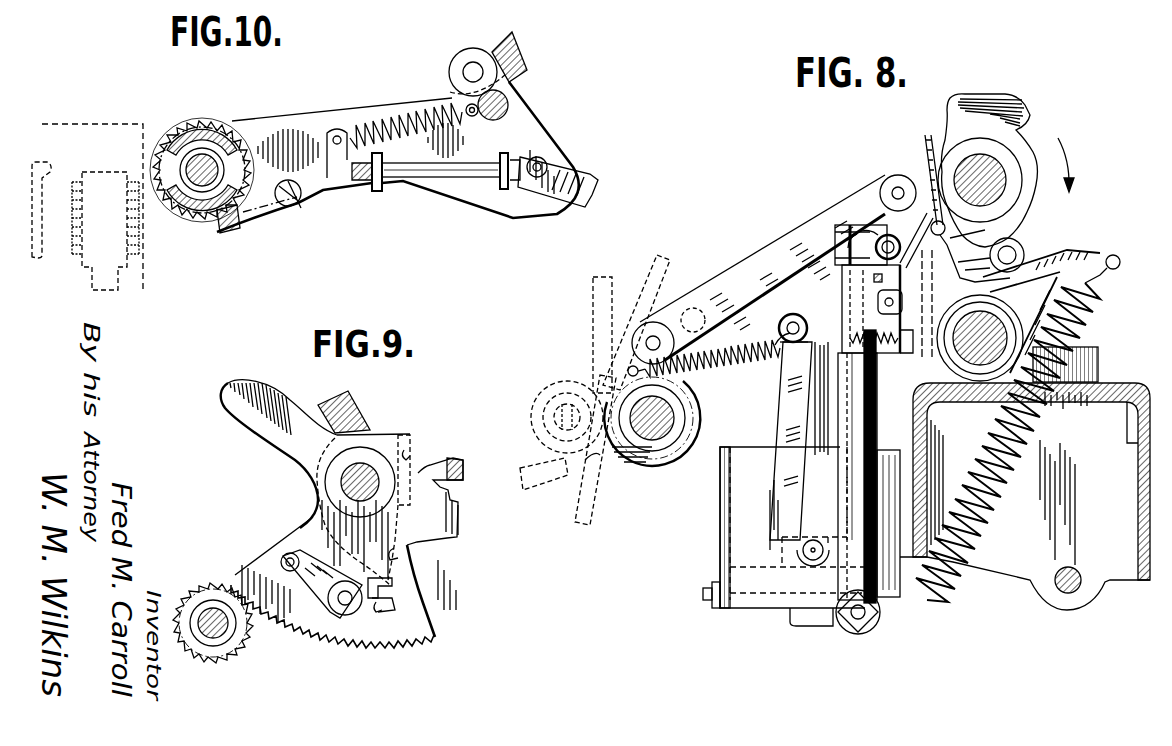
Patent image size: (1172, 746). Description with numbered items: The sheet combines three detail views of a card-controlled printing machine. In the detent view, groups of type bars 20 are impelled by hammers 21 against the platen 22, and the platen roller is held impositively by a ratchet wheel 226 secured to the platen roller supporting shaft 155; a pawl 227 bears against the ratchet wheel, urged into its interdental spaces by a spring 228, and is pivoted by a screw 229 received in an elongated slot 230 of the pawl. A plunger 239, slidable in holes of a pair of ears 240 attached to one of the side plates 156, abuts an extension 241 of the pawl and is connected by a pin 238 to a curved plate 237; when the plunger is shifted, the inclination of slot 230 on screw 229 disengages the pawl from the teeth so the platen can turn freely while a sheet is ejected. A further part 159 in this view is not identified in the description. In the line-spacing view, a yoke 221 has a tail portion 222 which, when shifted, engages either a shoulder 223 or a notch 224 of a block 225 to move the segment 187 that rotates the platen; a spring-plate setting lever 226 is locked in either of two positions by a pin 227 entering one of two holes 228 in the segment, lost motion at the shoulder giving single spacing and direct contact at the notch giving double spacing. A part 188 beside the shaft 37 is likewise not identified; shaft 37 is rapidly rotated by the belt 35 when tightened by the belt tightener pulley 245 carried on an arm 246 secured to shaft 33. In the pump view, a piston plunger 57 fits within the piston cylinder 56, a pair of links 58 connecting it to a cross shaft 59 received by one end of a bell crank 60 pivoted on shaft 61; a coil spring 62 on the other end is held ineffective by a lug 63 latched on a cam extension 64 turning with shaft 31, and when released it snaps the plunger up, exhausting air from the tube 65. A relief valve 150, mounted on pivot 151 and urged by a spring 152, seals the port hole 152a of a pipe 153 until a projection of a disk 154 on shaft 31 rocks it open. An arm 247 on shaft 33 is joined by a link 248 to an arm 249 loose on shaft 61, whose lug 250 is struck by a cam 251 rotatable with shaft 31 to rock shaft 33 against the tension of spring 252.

In FIG. 10, the hammers 21 is at (50, 170).
In FIG. 10, the type bars 20 is at (118, 172).
In FIG. 10, the platen 22 is at (182, 128).
In FIG. 10, the platen roller supporting shaft 155 is at (212, 160).
In FIG. 10, the side plates 156 is at (318, 135).
In FIG. 10, the spring / holes 228 is at (395, 125).
In FIG. 9, the spring / holes 228 is at (281, 602).
In FIG. 10, the arm extension 159 is at (520, 58).
In FIG. 10, the ears 240 is at (507, 160).
In FIG. 10, the pin 238 is at (548, 163).
In FIG. 10, the curved plate 237 is at (590, 180).
In FIG. 10, the ratchet wheel / setting lever 226 is at (215, 195).
In FIG. 9, the ratchet wheel / setting lever 226 is at (303, 570).
In FIG. 10, the pawl / pin 227 is at (238, 222).
In FIG. 9, the pawl / pin 227 is at (289, 553).
In FIG. 10, the screw 229 is at (305, 192).
In FIG. 10, the elongated slot 230 is at (385, 187).
In FIG. 10, the extension 241 is at (388, 186).
In FIG. 10, the plunger 239 is at (478, 178).
In FIG. 9, the yoke 221 is at (410, 455).
In FIG. 9, the tail portion 222 is at (398, 560).
In FIG. 9, the shoulder 223 is at (374, 590).
In FIG. 9, the notch 224 is at (392, 598).
In FIG. 9, the block 225 is at (380, 606).
In FIG. 9, the shaft 37 is at (222, 632).
In FIG. 9, the pinion 188 is at (217, 660).
In FIG. 9, the segment 187 is at (343, 640).
In FIG. 8, the cam 251 is at (1023, 115).
In FIG. 8, the cam extension 64 is at (930, 160).
In FIG. 8, the arm 249 is at (880, 217).
In FIG. 8, the spring 152 is at (842, 243).
In FIG. 8, the tube 65 is at (855, 228).
In FIG. 8, the pivot 151 is at (823, 247).
In FIG. 8, the link 248 is at (755, 262).
In FIG. 8, the shaft 31 is at (985, 188).
In FIG. 8, the disk 154 is at (955, 245).
In FIG. 8, the relief valve 150 is at (918, 260).
In FIG. 8, the lug 63 is at (902, 303).
In FIG. 8, the lug 250 is at (988, 272).
In FIG. 8, the cross shaft 59 is at (797, 318).
In FIG. 8, the spring 252 is at (728, 352).
In FIG. 8, the shaft 61 is at (985, 338).
In FIG. 8, the belt 35 is at (603, 290).
In FIG. 8, the belt tightener pulley 245 is at (556, 382).
In FIG. 8, the arm 247 is at (698, 376).
In FIG. 8, the port hole 152a is at (900, 365).
In FIG. 8, the bell crank 60 is at (905, 355).
In FIG. 8, the links 58 is at (787, 402).
In FIG. 8, the pipe 153 is at (858, 412).
In FIG. 8, the coil spring 62 is at (1035, 437).
In FIG. 8, the arm 246 is at (590, 456).
In FIG. 8, the shaft 33 is at (650, 425).
In FIG. 8, the piston cylinder 56 is at (758, 502).
In FIG. 8, the piston plunger 57 is at (760, 570).